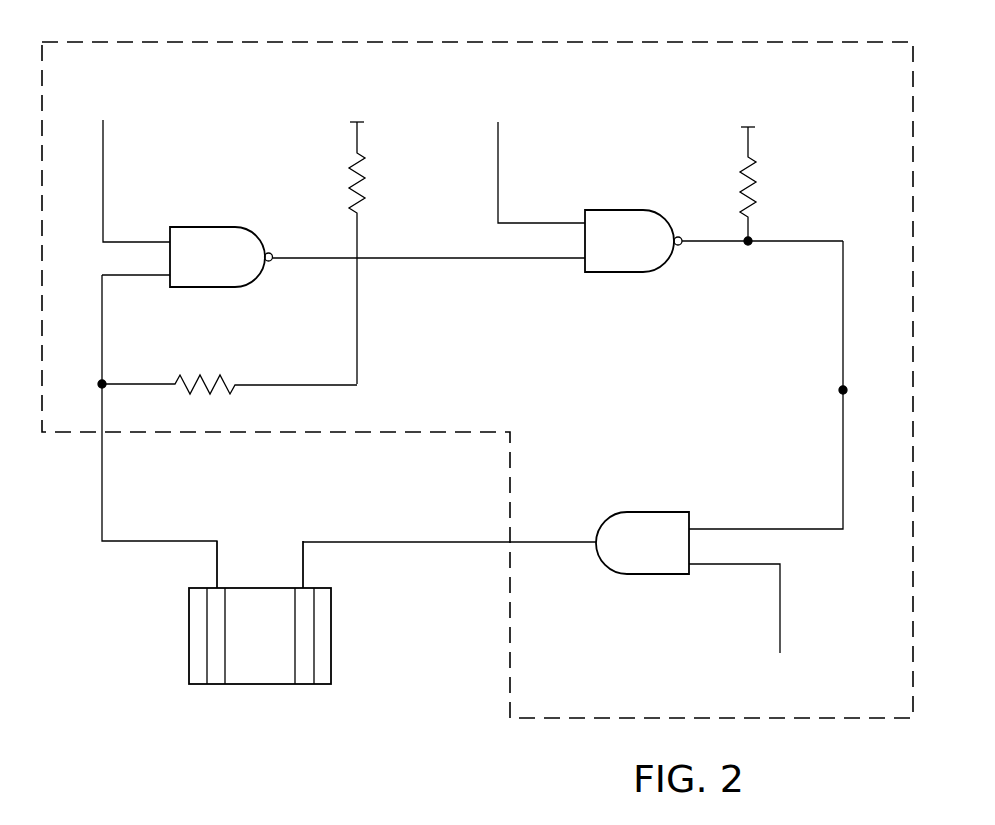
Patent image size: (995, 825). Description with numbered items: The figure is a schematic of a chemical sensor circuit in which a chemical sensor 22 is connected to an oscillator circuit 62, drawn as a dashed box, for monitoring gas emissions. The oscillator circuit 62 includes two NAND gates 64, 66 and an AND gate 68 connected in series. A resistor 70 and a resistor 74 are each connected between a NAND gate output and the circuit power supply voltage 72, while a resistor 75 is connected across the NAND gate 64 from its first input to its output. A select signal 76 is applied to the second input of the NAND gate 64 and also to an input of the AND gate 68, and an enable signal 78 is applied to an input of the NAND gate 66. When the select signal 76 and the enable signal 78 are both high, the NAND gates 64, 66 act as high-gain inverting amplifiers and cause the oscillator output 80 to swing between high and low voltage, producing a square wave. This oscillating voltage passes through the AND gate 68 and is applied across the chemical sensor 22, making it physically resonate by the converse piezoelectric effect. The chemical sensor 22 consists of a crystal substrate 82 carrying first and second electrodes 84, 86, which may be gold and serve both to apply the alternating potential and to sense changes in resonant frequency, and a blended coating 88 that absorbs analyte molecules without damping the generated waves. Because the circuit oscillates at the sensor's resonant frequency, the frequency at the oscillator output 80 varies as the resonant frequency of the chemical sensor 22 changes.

The chemical sensor 22 is at (258, 541).
The oscillator circuit 62 is at (607, 85).
The NAND gate 64 is at (198, 227).
The NAND gate 66 is at (625, 210).
The AND gate 68 is at (640, 512).
The resistor 70 is at (352, 176).
The circuit power supply voltage 72 is at (368, 105).
The resistor 74 is at (753, 190).
The resistor 75 is at (207, 375).
The select signal 76 is at (104, 172).
The enable signal 78 is at (498, 157).
The oscillator output 80 is at (843, 390).
The crystal substrate 82 is at (263, 600).
The first electrode 84 is at (217, 684).
The second electrode 86 is at (303, 684).
The blended coating 88 is at (189, 630).